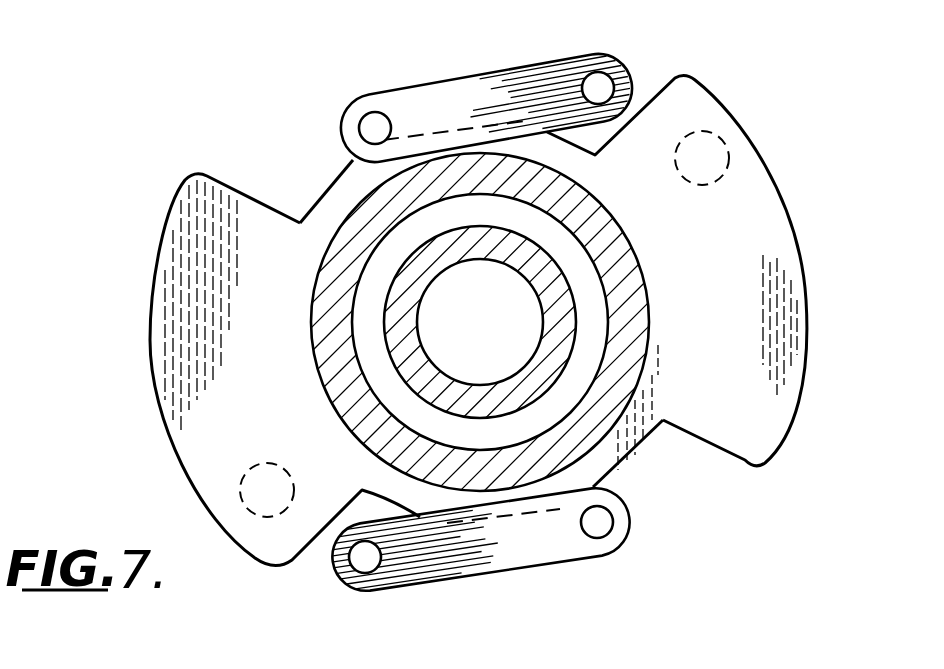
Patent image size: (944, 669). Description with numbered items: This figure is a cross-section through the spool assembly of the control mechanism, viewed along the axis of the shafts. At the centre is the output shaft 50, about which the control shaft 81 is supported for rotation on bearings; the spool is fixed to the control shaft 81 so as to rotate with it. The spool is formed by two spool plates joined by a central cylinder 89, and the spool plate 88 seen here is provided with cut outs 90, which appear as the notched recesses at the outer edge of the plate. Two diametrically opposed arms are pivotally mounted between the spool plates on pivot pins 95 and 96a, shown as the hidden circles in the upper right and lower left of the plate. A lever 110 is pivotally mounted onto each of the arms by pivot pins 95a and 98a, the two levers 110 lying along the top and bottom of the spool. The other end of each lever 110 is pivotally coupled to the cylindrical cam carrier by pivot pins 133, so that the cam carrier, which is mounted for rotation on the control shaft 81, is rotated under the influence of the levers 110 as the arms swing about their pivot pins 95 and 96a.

The output shaft 50 is at (462, 250).
The control shaft 81 is at (328, 300).
The spool plate 88 is at (730, 273).
The central cylinder 89 is at (308, 227).
The cut outs 90 is at (278, 183).
The pivot pin 95 is at (702, 158).
The pivot pin 95a is at (600, 86).
The pivot pin 96a is at (268, 490).
The pivot pin 98a is at (367, 560).
The lever 110 is at (530, 92).
The pivot pins 133 is at (372, 122).